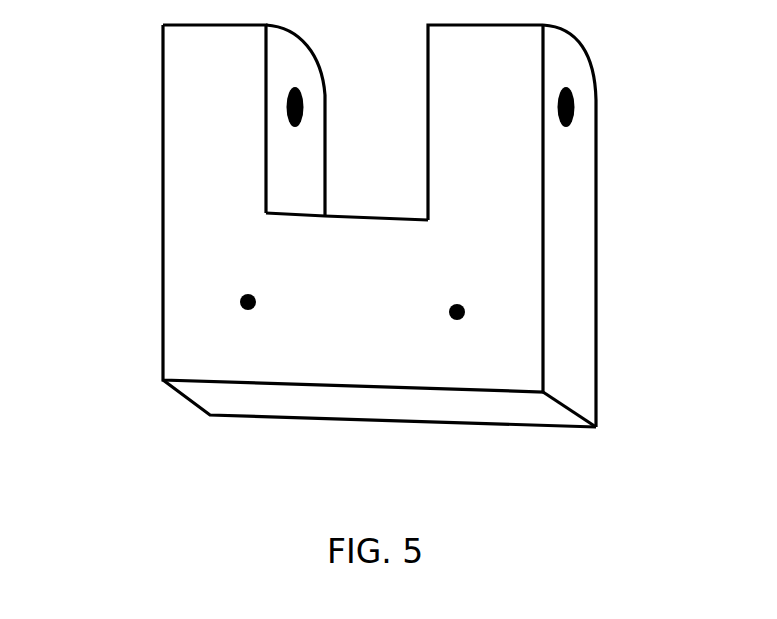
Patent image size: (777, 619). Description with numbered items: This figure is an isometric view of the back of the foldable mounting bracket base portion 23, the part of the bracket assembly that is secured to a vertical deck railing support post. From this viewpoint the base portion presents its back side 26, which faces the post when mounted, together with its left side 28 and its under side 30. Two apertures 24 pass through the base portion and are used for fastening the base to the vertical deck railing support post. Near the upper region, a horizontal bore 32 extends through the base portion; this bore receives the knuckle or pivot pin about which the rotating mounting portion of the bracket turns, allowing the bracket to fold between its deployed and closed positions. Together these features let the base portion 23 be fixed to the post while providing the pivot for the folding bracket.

The foldable mounting bracket base portion 23 is at (213, 77).
The aperture 24 is at (254, 318).
The back side 26 is at (252, 246).
The left side 28 is at (575, 263).
The under side 30 is at (258, 405).
The horizontal bore 32 is at (312, 118).